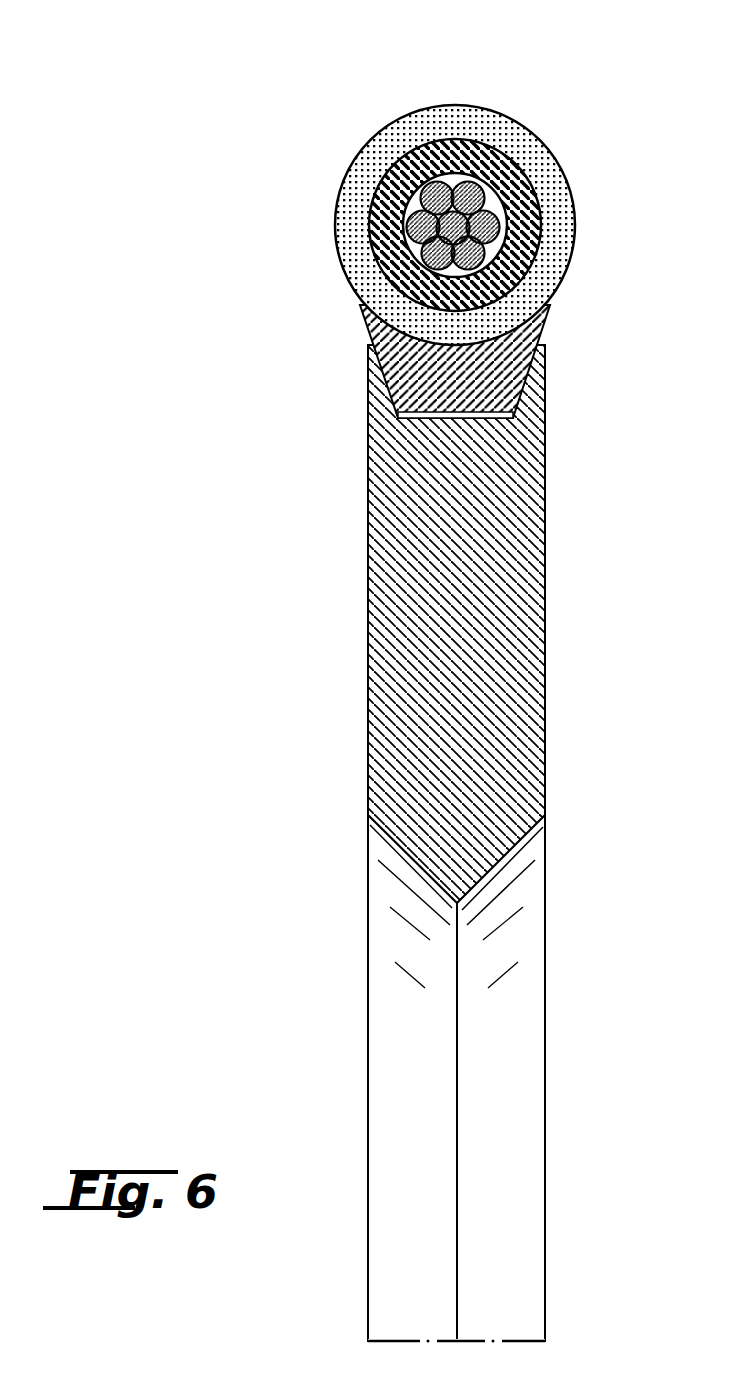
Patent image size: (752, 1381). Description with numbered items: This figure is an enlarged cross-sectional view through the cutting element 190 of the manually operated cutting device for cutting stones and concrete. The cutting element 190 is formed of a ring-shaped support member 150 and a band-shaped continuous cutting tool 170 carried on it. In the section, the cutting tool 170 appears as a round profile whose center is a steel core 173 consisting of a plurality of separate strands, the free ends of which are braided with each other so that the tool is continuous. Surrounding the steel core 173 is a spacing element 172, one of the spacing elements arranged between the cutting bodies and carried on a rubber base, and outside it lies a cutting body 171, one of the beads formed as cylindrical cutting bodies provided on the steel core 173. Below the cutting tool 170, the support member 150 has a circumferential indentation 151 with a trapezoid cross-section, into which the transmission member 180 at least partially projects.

The cutting element 190 is at (437, 671).
The band-shaped continuous cutting tool 170 is at (424, 188).
The cutting body 171 is at (350, 192).
The spacing element 172 is at (368, 240).
The steel core 173 is at (480, 185).
The transmission member 180 is at (508, 367).
The ring-shaped support member 150 is at (388, 483).
The circumferential indentation 151 is at (432, 410).